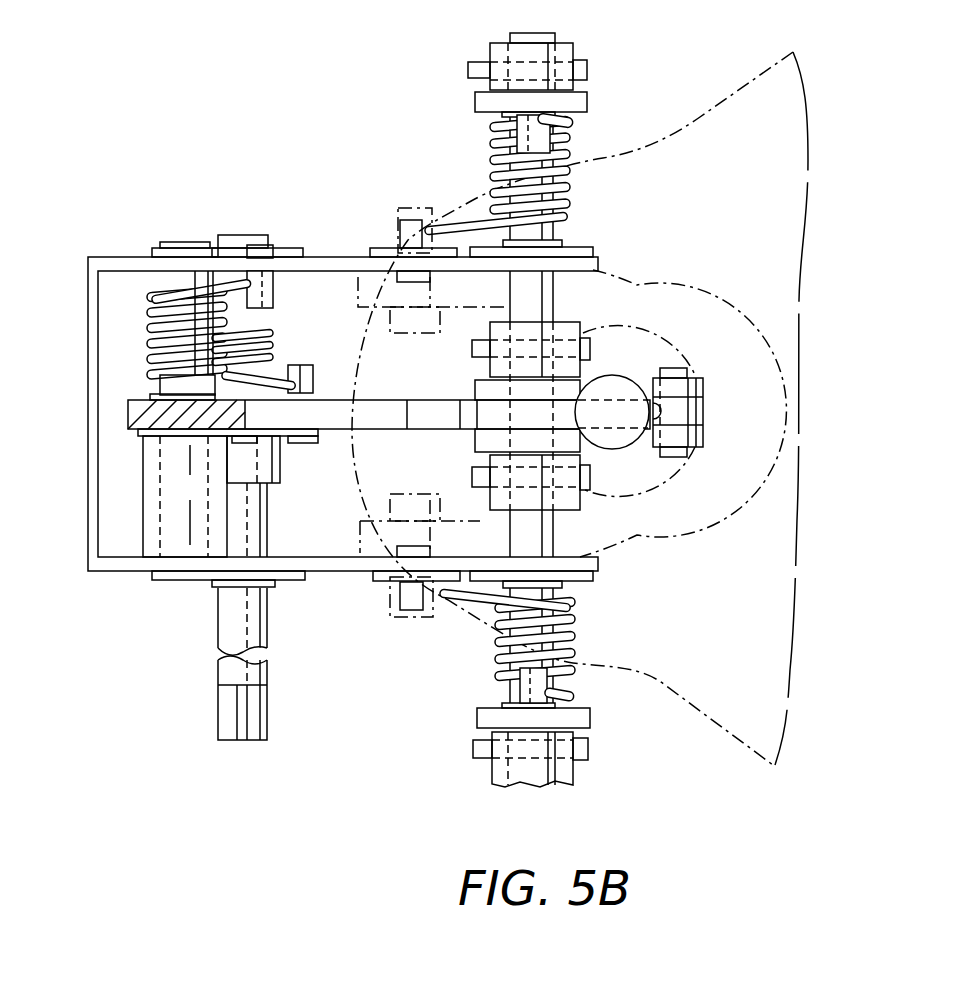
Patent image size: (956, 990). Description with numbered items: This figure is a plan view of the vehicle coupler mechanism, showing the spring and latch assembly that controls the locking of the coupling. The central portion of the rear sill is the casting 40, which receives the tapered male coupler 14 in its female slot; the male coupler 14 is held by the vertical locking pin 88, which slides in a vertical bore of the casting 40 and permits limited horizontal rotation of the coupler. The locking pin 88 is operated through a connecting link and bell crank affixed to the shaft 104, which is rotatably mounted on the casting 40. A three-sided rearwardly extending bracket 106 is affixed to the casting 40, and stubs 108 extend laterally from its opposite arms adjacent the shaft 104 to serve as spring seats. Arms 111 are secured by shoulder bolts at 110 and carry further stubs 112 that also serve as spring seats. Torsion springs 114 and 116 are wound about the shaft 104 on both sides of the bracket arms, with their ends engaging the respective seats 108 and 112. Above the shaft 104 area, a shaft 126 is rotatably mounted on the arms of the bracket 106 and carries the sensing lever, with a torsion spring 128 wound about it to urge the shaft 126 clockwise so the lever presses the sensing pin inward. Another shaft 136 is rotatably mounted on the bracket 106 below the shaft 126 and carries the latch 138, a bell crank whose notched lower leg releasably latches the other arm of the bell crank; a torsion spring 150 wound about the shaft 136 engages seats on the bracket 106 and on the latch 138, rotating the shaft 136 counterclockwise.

The male coupler 14 is at (724, 113).
The casting 40 is at (724, 340).
The vertical locking pin 88 is at (641, 326).
The shaft 104 is at (562, 235).
The bracket 106 is at (354, 255).
The stubs 108 is at (394, 218).
The shoulder bolts 110 is at (588, 62).
The arms 111 is at (587, 93).
The stubs 112 is at (567, 124).
The torsion spring 114 is at (573, 633).
The torsion spring 116 is at (578, 193).
The shaft 126 is at (160, 388).
The torsion spring 128 is at (158, 302).
The shaft 136 is at (262, 617).
The latch 138 is at (283, 468).
The torsion spring 150 is at (268, 352).